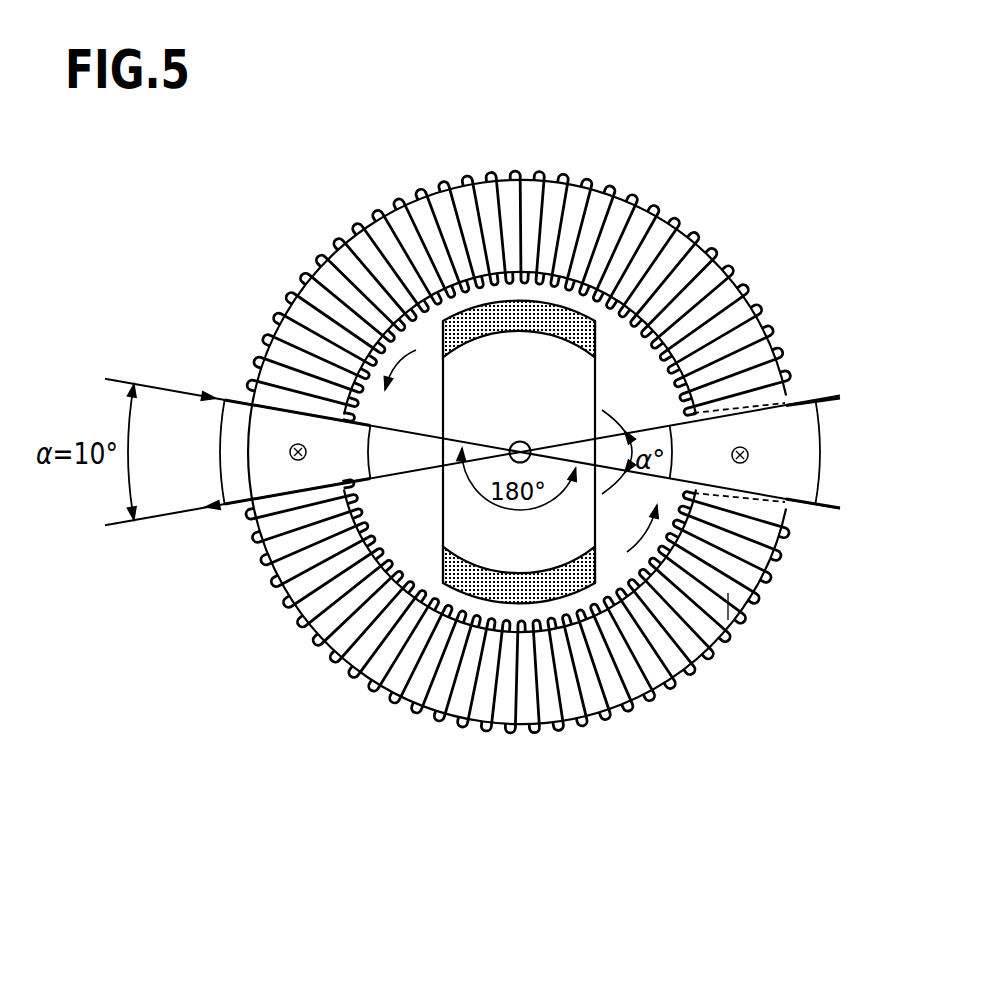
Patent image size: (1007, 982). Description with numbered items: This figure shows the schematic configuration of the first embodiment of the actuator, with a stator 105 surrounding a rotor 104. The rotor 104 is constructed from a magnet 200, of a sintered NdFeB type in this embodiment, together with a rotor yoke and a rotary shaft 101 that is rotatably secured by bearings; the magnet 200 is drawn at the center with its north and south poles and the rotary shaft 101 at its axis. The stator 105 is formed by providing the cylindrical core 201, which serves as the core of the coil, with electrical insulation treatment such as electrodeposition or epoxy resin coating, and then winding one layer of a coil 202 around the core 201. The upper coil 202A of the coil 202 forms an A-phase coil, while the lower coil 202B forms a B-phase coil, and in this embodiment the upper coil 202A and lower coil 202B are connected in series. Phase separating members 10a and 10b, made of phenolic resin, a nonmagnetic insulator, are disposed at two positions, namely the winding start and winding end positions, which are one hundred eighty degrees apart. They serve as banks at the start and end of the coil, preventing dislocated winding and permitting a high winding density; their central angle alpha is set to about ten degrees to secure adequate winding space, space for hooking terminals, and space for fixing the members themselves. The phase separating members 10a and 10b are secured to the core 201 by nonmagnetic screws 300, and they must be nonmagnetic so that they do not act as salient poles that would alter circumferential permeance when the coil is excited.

The stator 105 is at (307, 245).
The core 201 is at (549, 698).
The coil 202 is at (241, 397).
The upper coil 202A is at (543, 168).
The lower coil 202B is at (633, 715).
The magnet 200 is at (565, 303).
The rotary shaft 101 is at (528, 443).
The rotor 104 is at (573, 528).
The phase separating member 10a is at (810, 450).
The phase separating member 10b is at (313, 463).
The nonmagnetic screw 300 is at (292, 459).